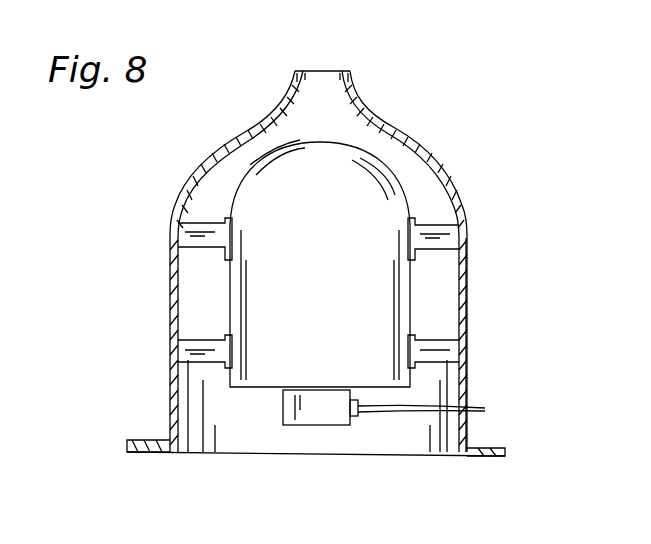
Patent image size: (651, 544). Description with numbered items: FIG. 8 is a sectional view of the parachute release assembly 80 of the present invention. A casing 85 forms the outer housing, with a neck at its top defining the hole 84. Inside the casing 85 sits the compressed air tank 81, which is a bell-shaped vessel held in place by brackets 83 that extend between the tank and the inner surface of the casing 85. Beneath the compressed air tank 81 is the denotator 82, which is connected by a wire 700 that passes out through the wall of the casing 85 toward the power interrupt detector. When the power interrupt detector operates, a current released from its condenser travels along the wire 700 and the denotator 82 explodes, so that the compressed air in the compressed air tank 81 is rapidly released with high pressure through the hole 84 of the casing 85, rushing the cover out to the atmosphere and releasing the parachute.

The motor housing assembly 80 is at (135, 253).
The compressed air tank 81 is at (360, 152).
The denotator 82 is at (316, 428).
The mounting brackets 83 is at (195, 250).
The hole 84 is at (325, 78).
The casing 85 is at (462, 185).
The wire 700 is at (474, 396).